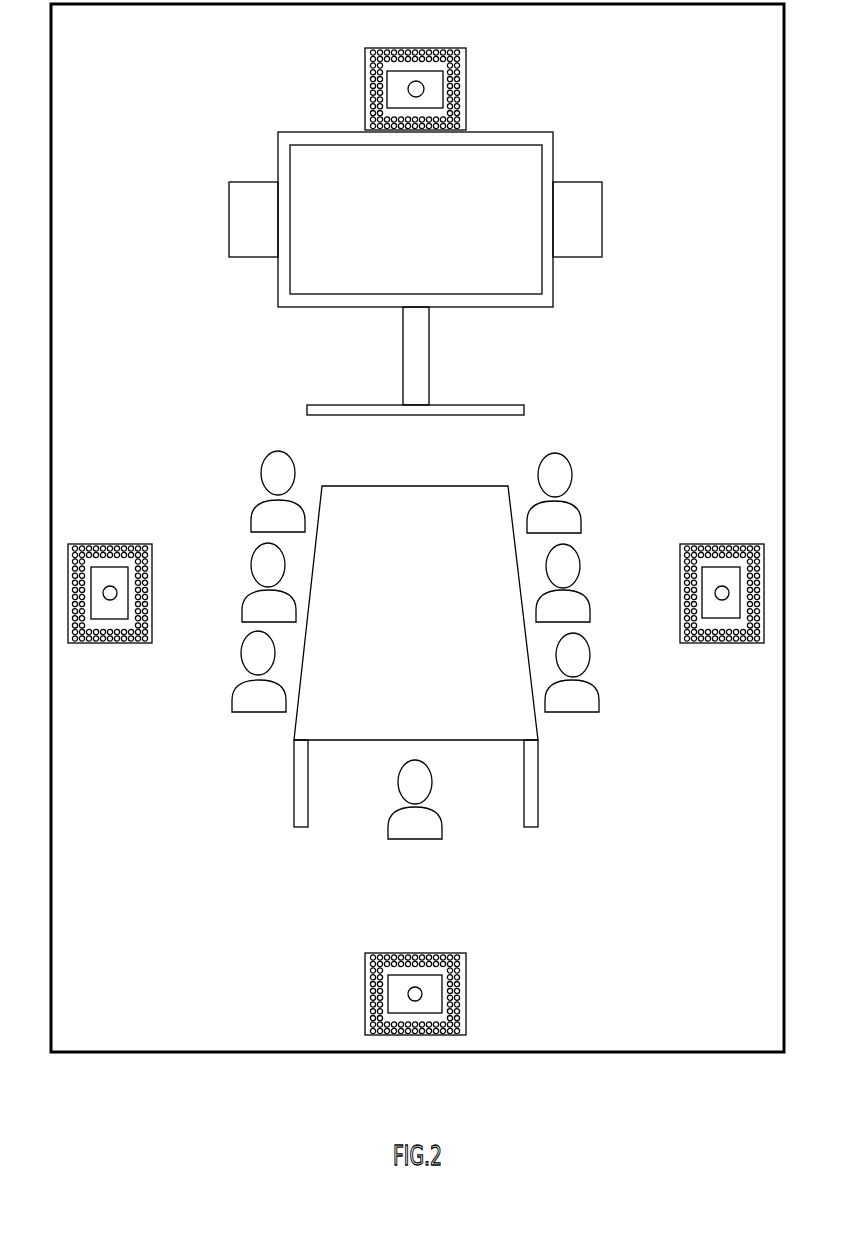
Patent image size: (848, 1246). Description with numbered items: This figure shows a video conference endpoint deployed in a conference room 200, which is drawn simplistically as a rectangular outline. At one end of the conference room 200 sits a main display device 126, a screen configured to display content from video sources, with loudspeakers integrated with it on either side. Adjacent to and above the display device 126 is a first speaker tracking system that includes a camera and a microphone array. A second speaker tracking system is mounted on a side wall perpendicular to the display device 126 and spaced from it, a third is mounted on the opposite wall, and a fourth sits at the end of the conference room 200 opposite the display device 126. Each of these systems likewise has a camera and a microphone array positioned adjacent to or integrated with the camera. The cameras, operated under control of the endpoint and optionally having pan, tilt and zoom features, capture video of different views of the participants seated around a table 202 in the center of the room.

The main display device 126 is at (553, 173).
The conference room 200 is at (718, 77).
The table 202 is at (425, 628).